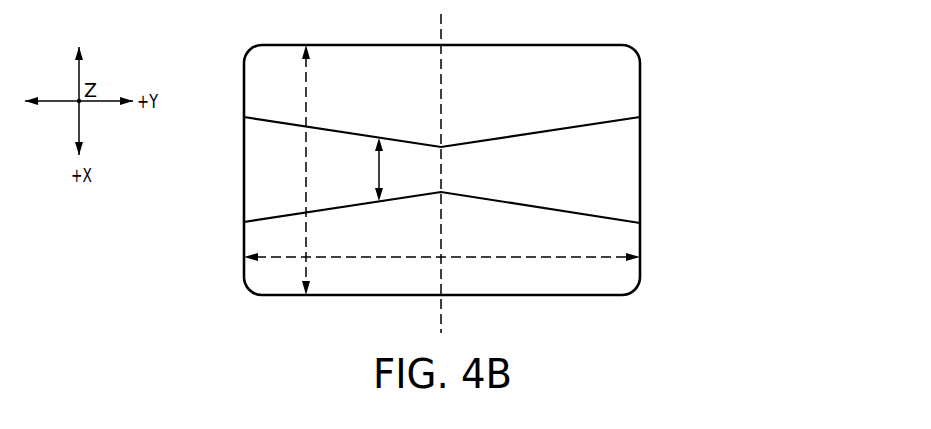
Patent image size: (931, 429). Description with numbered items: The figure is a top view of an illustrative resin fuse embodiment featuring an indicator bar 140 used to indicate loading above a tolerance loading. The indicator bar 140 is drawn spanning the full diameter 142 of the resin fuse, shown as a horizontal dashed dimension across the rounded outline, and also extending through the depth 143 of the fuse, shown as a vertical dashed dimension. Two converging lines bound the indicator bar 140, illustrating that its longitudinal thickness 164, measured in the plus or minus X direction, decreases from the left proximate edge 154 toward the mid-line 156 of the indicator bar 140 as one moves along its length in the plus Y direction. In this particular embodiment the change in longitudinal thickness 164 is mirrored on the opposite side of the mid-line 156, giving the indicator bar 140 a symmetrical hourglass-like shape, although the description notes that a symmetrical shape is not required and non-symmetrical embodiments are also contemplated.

The indicator bar 140 is at (640, 208).
The diameter 142 is at (459, 256).
The depth 143 is at (306, 83).
The proximate edge 154 is at (244, 157).
The mid-line 156 is at (441, 101).
The longitudinal thickness 164 is at (379, 170).